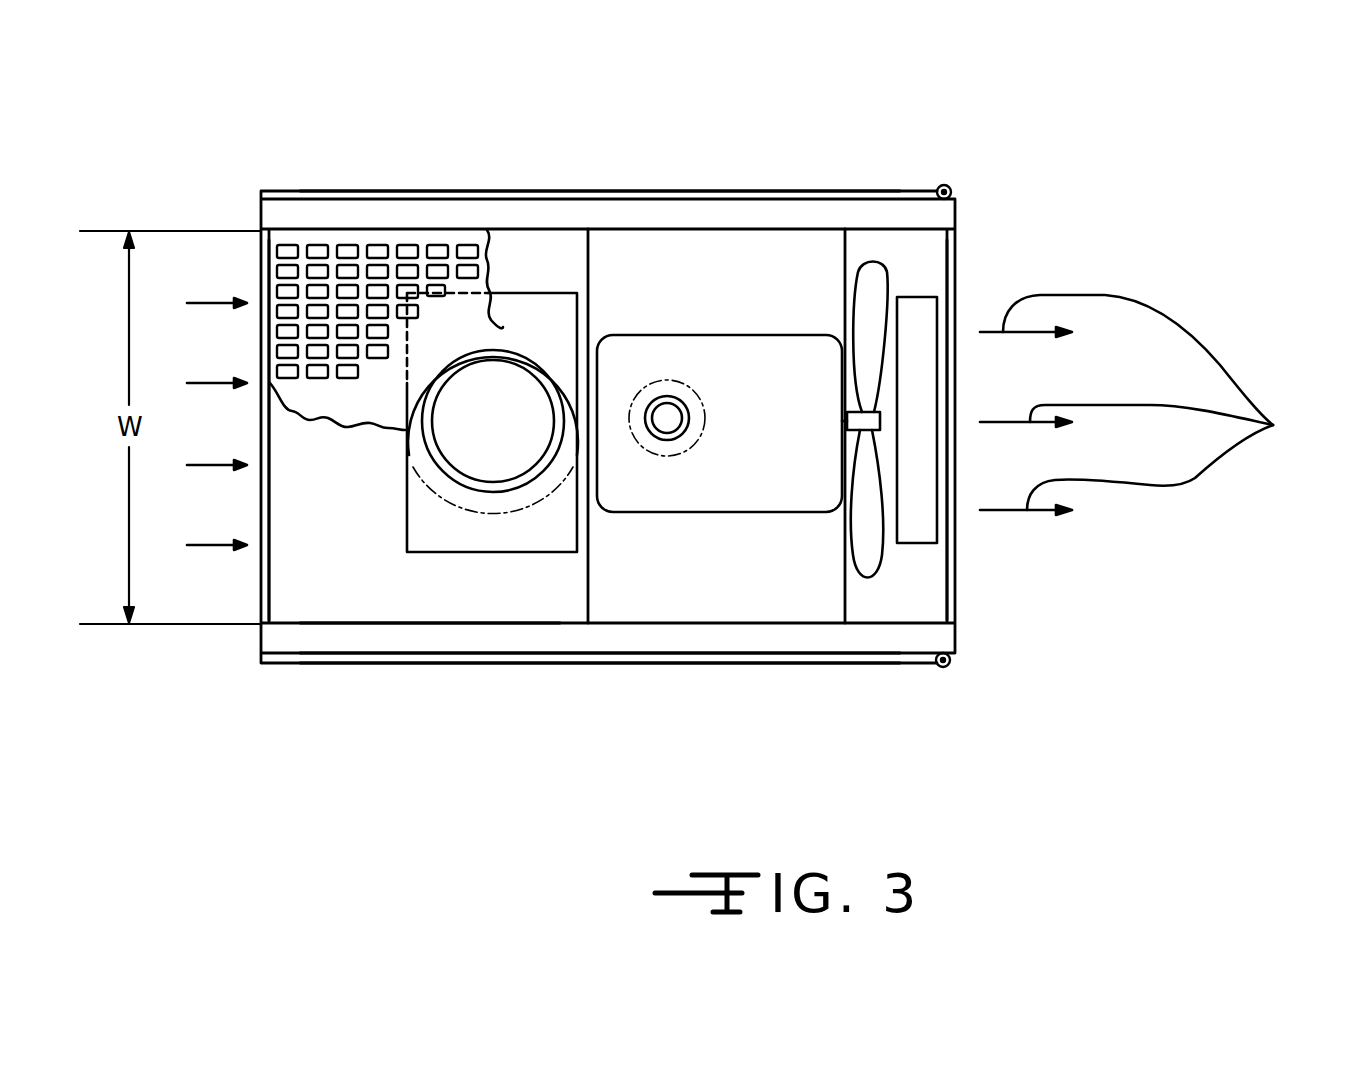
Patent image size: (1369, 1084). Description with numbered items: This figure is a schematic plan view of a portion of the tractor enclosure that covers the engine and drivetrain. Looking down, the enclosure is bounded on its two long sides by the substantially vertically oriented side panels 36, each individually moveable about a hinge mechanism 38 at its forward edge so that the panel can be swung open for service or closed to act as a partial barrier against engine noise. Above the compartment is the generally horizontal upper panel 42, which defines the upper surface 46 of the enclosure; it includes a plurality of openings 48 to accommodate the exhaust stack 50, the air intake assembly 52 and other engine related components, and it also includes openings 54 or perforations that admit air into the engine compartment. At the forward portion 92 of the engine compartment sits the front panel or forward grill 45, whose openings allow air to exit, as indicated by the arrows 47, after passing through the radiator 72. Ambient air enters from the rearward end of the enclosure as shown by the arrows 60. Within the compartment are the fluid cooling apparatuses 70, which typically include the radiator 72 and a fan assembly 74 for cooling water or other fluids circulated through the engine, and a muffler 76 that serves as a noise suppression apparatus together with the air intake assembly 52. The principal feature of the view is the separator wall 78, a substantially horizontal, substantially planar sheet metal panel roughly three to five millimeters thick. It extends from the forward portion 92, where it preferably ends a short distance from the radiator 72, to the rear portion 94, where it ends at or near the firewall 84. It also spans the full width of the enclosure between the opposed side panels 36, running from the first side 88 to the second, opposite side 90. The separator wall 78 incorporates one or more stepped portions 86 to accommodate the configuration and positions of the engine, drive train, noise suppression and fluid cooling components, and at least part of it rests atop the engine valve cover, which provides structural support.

The side panels 36 is at (813, 195).
The hinge mechanism 38 is at (947, 668).
The upper panel 42 is at (302, 263).
The forward grill 45 is at (958, 597).
The upper surface 46 is at (478, 245).
The arrows 47 is at (1144, 405).
The openings 48 is at (525, 357).
The exhaust stack 50 is at (667, 395).
The air intake assembly 52 is at (473, 343).
The openings 54 is at (388, 266).
The arrows 60 is at (207, 545).
The fluid cooling apparatuses 70 is at (925, 372).
The radiator 72 is at (920, 493).
The fan assembly 74 is at (865, 560).
The muffler 76 is at (780, 450).
The separator wall 78 is at (477, 607).
The firewall 84 is at (265, 587).
The stepped portions 86 is at (585, 585).
The first side 88 is at (758, 670).
The second side 90 is at (752, 186).
The forward portion 92 is at (930, 571).
The rear portion 94 is at (315, 668).